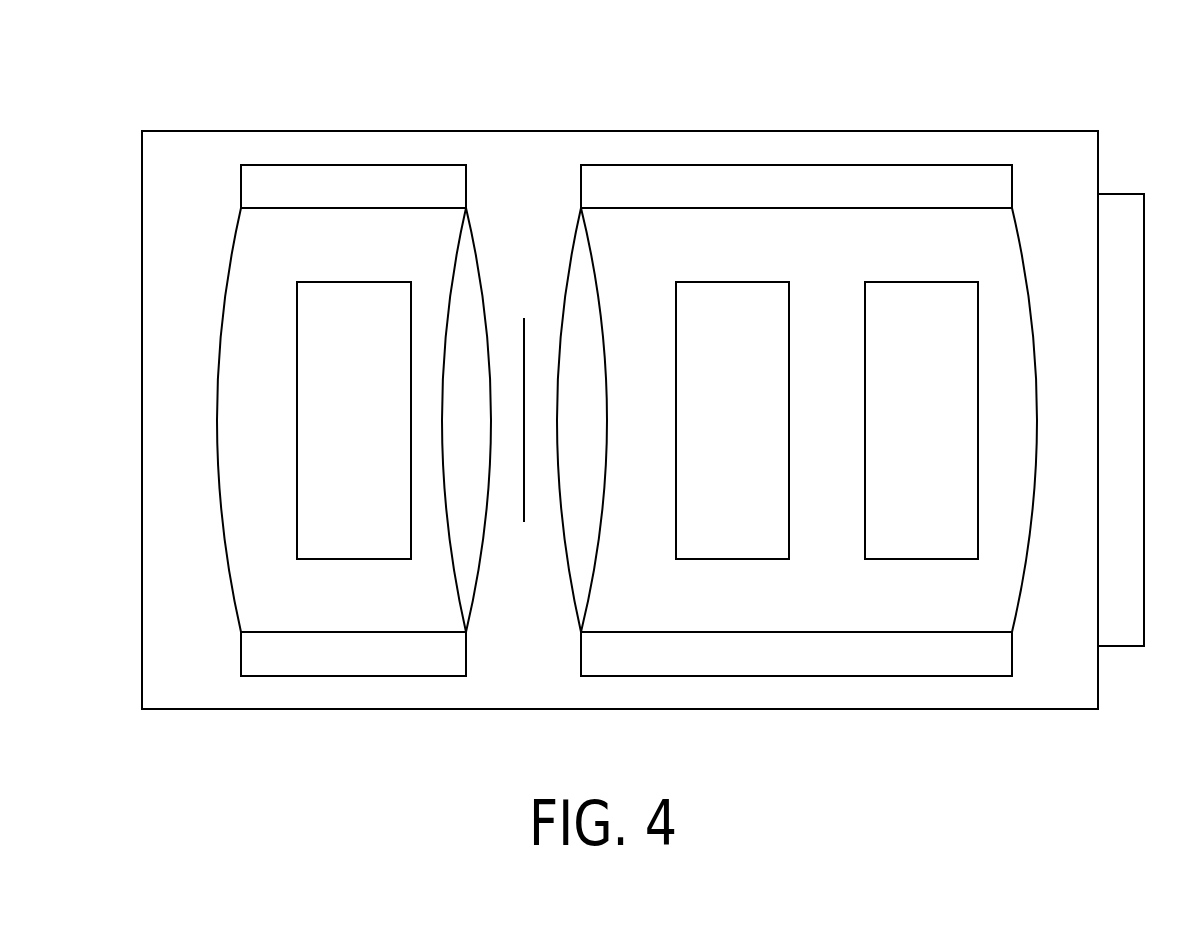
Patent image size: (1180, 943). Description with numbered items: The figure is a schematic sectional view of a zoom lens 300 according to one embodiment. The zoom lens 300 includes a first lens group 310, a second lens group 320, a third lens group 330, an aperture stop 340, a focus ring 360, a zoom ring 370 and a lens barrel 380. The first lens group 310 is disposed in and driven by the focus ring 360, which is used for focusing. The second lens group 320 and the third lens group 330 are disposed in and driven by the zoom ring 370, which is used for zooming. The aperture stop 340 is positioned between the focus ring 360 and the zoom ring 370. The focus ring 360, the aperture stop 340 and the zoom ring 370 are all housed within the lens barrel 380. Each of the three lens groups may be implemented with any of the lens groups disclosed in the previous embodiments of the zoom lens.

The zoom lens 300 is at (661, 403).
The first lens group 310 is at (348, 523).
The second lens group 320 is at (727, 524).
The third lens group 330 is at (915, 523).
The aperture stop 340 is at (523, 495).
The focus ring 360 is at (365, 165).
The zoom ring 370 is at (745, 165).
The lens barrel 380 is at (1042, 157).